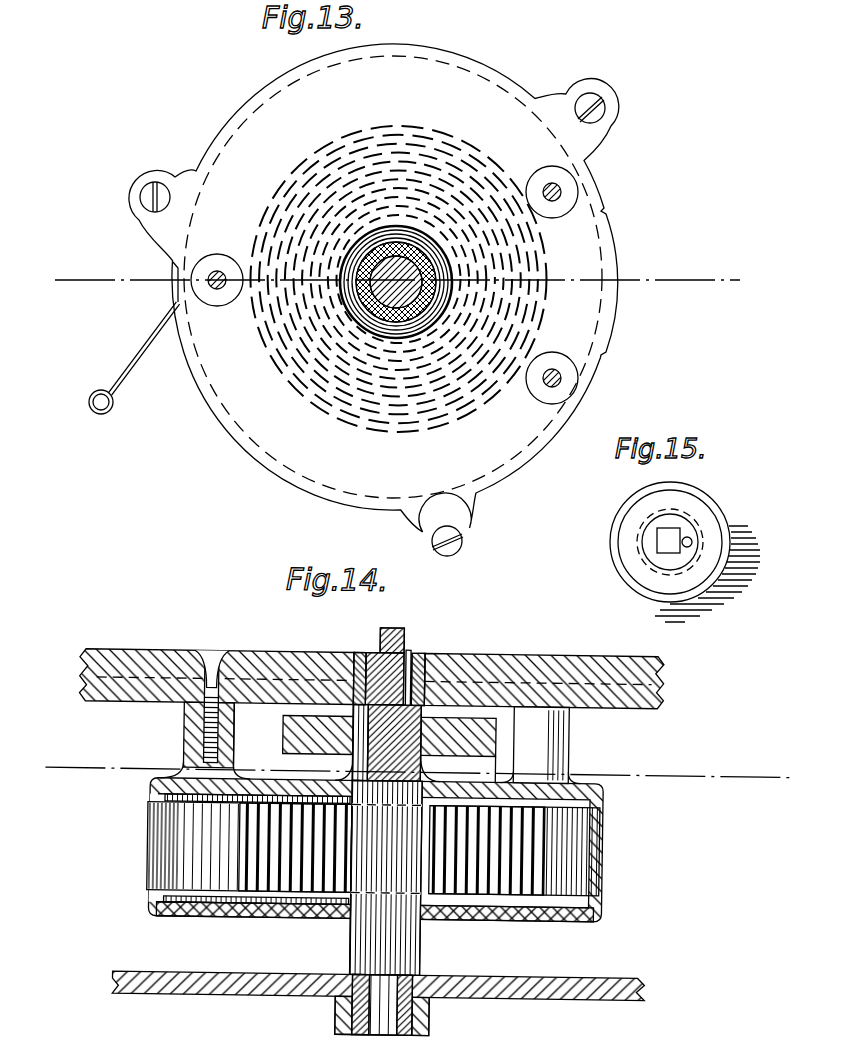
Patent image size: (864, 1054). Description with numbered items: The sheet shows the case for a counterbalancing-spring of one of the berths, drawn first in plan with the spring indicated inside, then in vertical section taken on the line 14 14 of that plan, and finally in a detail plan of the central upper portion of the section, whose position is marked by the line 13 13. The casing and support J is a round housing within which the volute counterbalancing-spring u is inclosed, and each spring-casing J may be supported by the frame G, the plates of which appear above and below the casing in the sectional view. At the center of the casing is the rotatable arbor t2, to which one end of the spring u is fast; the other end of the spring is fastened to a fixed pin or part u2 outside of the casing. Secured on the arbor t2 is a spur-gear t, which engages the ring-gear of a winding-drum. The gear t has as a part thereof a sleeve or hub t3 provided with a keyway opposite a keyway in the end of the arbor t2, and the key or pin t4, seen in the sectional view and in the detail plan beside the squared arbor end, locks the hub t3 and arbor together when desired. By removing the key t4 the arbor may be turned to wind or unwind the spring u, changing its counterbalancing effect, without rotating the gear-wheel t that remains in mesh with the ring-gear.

In FIG. 14, the section line 13 13 is at (401, 776).
In FIG. 13, the section line 14 14 is at (378, 286).
In FIG. 15, the frame G is at (716, 520).
In FIG. 14, the frame G is at (370, 826).
In FIG. 13, the spring-casing and support J is at (374, 300).
In FIG. 14, the spring-casing and support J is at (246, 924).
In FIG. 13, the volute counterbalancing-spring u is at (182, 297).
In FIG. 14, the volute counterbalancing-spring u is at (196, 835).
In FIG. 13, the fixed pin u2 is at (89, 402).
In FIG. 13, the spur-gear t is at (442, 290).
In FIG. 14, the spur-gear t is at (282, 743).
In FIG. 13, the rotatable arbor t2 is at (412, 250).
In FIG. 15, the rotatable arbor t2 is at (657, 541).
In FIG. 14, the rotatable arbor t2 is at (387, 831).
In FIG. 13, the sleeve or hub t3 is at (440, 280).
In FIG. 15, the sleeve or hub t3 is at (730, 548).
In FIG. 14, the sleeve or hub t3 is at (356, 652).
In FIG. 15, the key or pin t4 is at (692, 540).
In FIG. 14, the key or pin t4 is at (407, 652).